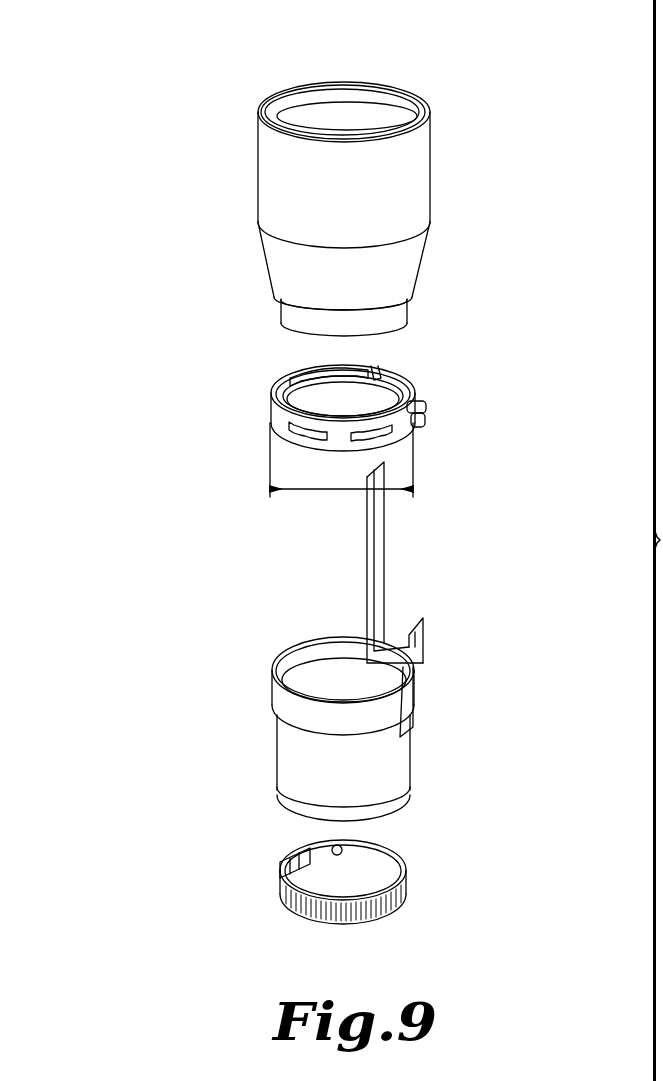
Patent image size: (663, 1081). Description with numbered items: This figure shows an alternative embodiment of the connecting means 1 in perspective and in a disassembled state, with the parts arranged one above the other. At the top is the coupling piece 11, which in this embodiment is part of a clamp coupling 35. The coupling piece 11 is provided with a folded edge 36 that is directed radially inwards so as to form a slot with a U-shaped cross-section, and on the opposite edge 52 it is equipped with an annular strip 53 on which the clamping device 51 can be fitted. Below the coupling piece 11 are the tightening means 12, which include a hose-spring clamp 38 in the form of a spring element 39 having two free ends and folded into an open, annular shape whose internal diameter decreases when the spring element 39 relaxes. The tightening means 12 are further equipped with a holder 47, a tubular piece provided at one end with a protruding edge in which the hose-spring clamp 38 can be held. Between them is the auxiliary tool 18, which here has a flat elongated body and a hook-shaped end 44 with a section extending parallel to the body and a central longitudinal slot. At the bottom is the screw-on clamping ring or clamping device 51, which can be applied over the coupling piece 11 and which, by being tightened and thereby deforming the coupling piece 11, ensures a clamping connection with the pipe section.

The connecting means 1 is at (156, 72).
The clamp coupling 35 is at (143, 319).
The folded edge 36 is at (377, 98).
The coupling piece 11 is at (402, 181).
The annular strip 53 is at (438, 305).
The edge 52 is at (283, 323).
The tightening means 12 is at (185, 547).
The hose-spring clamp 38 is at (490, 412).
The spring element 39 is at (377, 373).
The auxiliary tool 18 is at (423, 549).
The hook-shaped end 44 is at (460, 640).
The holder 47 is at (495, 722).
The clamping device 51 is at (450, 889).